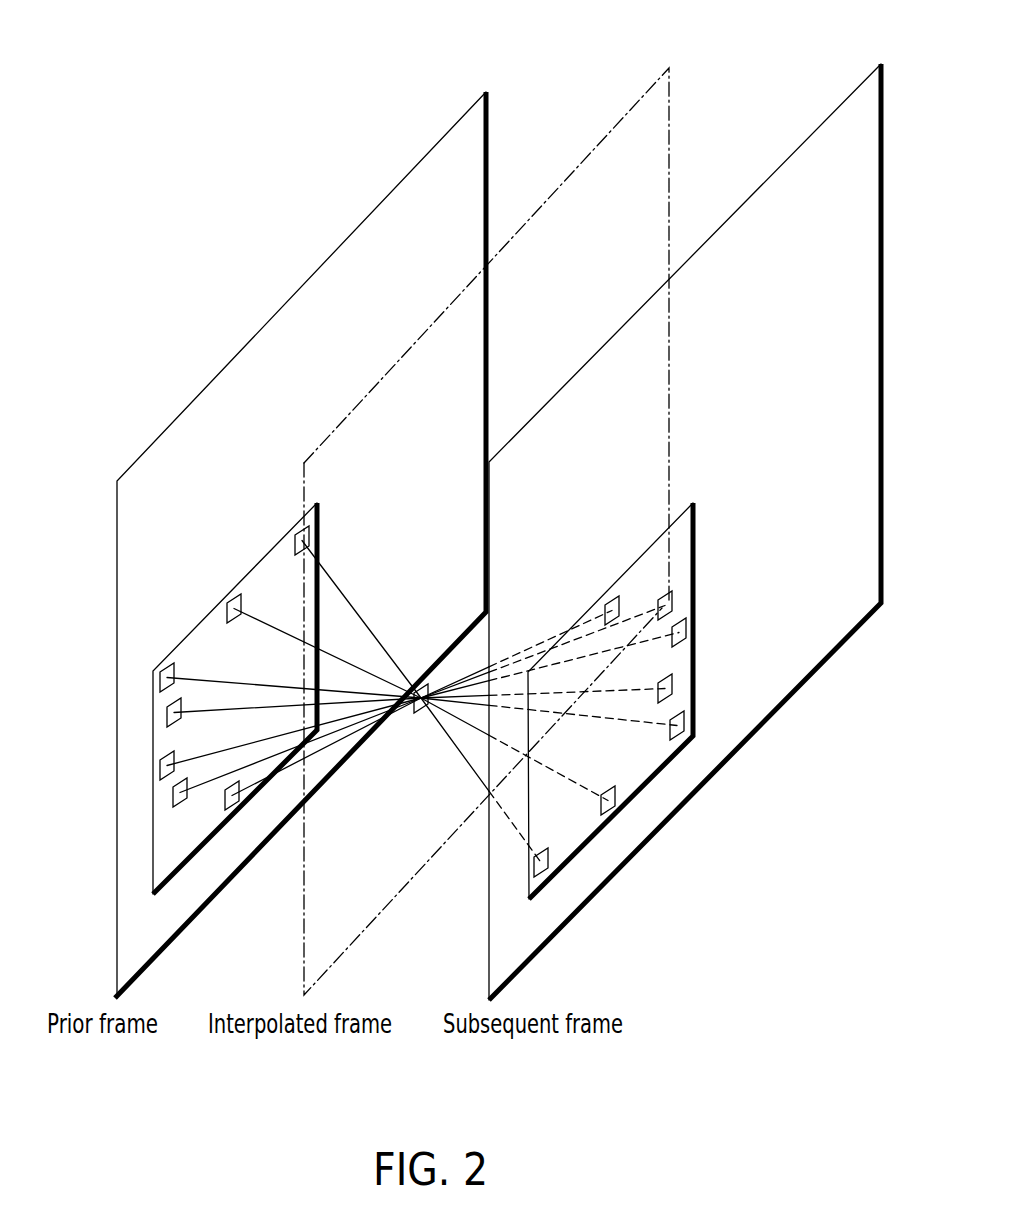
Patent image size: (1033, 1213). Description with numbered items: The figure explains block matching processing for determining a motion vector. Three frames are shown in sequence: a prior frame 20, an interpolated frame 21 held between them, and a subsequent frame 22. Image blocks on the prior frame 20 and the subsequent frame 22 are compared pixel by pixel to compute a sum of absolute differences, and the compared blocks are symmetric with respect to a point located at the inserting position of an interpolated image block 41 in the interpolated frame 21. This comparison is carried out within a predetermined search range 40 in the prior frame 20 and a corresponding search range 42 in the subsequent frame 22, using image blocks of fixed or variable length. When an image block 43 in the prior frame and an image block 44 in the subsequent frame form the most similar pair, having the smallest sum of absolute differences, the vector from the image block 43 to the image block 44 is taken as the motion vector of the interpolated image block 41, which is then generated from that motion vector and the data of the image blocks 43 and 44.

The prior frame 20 is at (115, 917).
The interpolated frame 21 is at (303, 917).
The subsequent frame 22 is at (489, 917).
The search range 40 is at (182, 643).
The interpolated image block 41 is at (423, 684).
The search range 42 is at (697, 563).
The image block 43 is at (247, 589).
The image block 44 is at (600, 806).